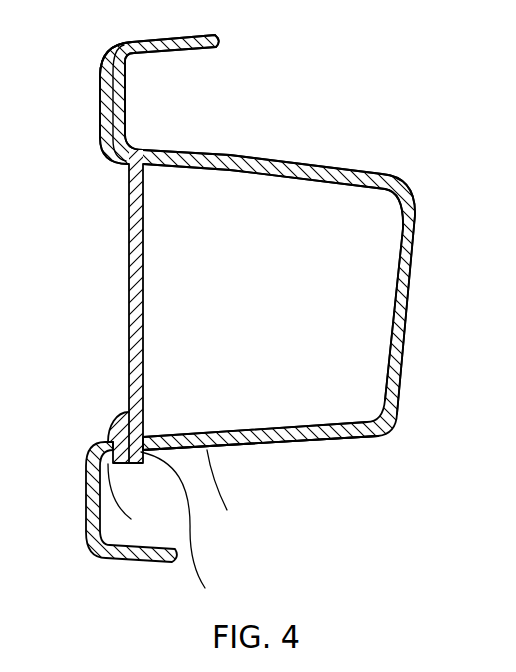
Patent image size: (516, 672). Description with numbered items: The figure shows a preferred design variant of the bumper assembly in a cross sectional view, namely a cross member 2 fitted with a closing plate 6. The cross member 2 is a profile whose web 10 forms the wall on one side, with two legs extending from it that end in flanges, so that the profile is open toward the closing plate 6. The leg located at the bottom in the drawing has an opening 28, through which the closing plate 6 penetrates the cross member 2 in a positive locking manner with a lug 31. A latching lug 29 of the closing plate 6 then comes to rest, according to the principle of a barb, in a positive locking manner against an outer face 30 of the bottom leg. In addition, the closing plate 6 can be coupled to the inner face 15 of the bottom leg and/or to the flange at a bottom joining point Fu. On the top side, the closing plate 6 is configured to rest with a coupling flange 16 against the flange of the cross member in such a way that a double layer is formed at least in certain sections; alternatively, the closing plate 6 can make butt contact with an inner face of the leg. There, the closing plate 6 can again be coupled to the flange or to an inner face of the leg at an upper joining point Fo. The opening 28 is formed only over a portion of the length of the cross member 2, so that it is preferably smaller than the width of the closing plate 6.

The cross member 2 is at (305, 162).
The closing plate 6 is at (143, 297).
The web 10 is at (405, 337).
The inner face of the leg 15 is at (200, 432).
The coupling flange 16 is at (101, 120).
The opening 28 is at (143, 436).
The latching lug 29 is at (134, 499).
The outer face of the bottom leg 30 is at (231, 497).
The lug 31 is at (189, 528).
The upper joining point Fo is at (107, 60).
The bottom joining point Fu is at (122, 423).